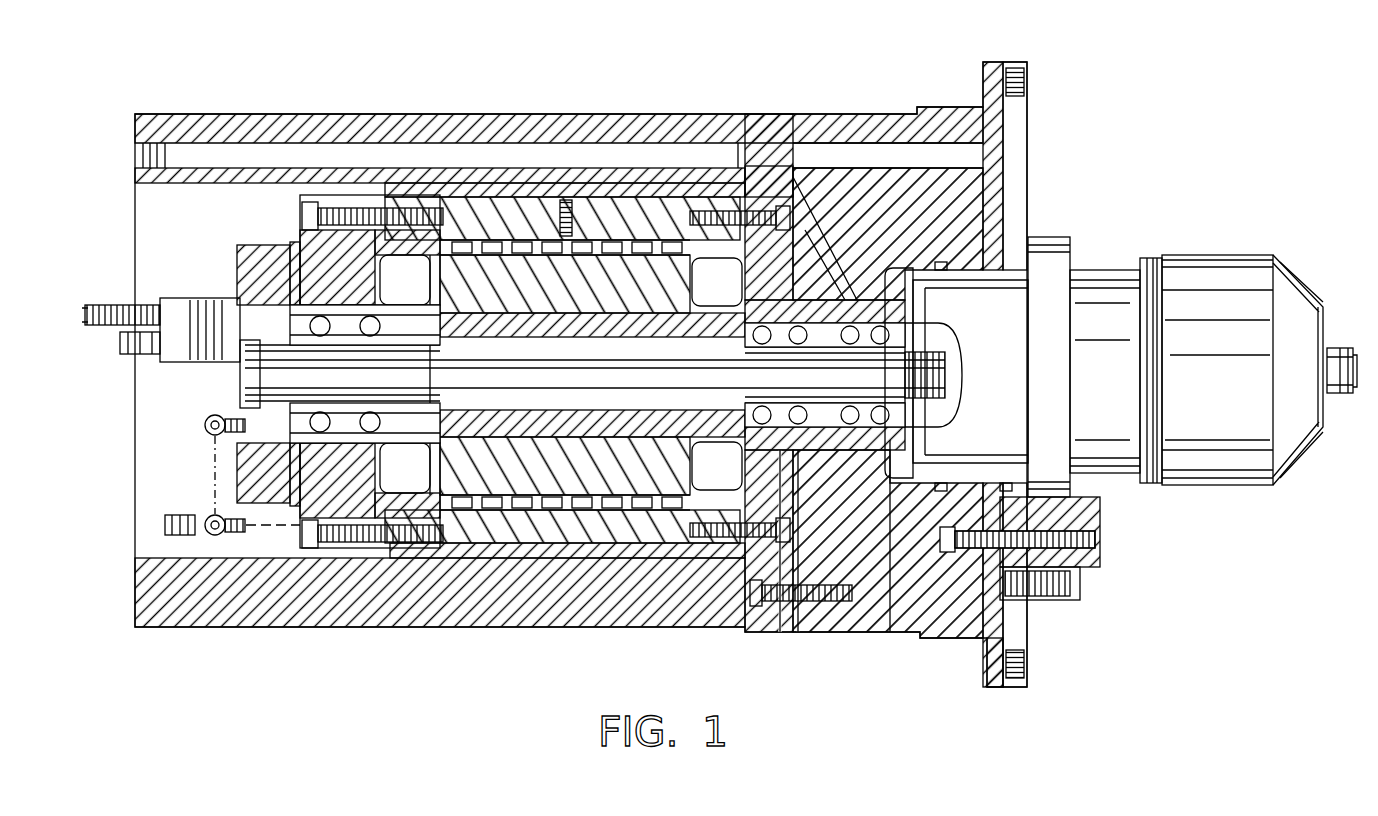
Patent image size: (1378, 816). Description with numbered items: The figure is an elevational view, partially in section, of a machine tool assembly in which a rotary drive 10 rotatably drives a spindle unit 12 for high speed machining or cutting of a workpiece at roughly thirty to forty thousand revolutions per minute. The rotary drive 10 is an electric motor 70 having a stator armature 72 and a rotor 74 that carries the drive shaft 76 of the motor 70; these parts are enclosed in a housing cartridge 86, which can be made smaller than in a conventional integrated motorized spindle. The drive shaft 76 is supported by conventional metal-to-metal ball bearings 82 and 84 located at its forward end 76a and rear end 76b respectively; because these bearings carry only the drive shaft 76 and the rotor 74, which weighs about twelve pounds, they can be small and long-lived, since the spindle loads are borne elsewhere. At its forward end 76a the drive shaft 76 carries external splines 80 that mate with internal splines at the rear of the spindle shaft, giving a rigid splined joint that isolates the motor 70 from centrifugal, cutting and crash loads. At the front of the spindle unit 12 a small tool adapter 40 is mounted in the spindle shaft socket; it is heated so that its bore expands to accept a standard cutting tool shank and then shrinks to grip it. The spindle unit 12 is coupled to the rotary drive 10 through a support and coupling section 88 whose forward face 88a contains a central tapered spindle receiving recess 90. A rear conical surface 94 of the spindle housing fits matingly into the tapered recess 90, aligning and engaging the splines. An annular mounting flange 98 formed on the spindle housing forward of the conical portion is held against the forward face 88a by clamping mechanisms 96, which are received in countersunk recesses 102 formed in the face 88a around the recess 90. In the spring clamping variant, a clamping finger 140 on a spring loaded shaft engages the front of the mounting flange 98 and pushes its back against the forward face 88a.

The rotary drive 10 is at (107, 115).
The spindle unit 12 is at (1116, 216).
The tool adapter 40 is at (1344, 395).
The electric motor 70 is at (375, 245).
The stator armature 72 is at (465, 480).
The rotor 74 is at (585, 425).
The drive shaft 76 is at (660, 520).
The forward end of drive shaft 76a is at (790, 178).
The rear end of drive shaft 76b is at (432, 190).
The external splines 80 is at (1022, 192).
The front ball bearing 82 is at (800, 435).
The rear ball bearing 84 is at (365, 420).
The housing cartridge 86 is at (505, 615).
The support and coupling section 88 is at (940, 636).
The forward face of support and coupling section 88a is at (1040, 642).
The tapered spindle receiving recess 90 is at (937, 277).
The rear conical surface 94 is at (1017, 228).
The clamping mechanism 96 is at (1088, 595).
The annular mounting flange 98 is at (1072, 240).
The countersunk recess 102 is at (1080, 612).
The clamping finger 140 is at (1093, 510).